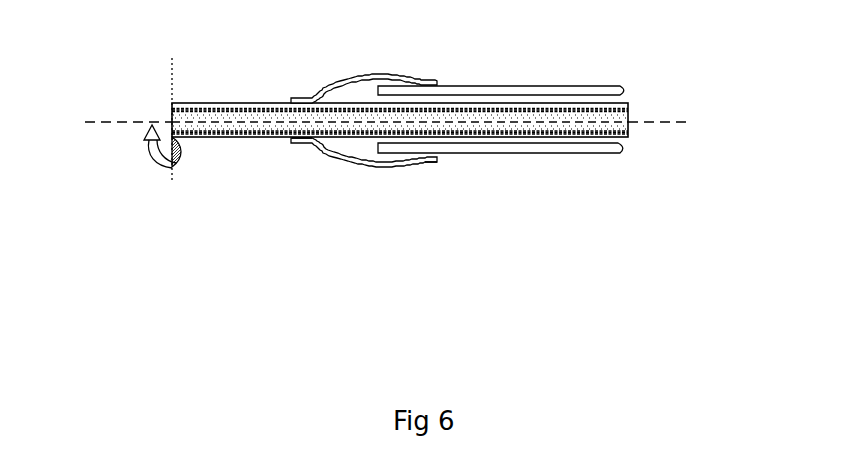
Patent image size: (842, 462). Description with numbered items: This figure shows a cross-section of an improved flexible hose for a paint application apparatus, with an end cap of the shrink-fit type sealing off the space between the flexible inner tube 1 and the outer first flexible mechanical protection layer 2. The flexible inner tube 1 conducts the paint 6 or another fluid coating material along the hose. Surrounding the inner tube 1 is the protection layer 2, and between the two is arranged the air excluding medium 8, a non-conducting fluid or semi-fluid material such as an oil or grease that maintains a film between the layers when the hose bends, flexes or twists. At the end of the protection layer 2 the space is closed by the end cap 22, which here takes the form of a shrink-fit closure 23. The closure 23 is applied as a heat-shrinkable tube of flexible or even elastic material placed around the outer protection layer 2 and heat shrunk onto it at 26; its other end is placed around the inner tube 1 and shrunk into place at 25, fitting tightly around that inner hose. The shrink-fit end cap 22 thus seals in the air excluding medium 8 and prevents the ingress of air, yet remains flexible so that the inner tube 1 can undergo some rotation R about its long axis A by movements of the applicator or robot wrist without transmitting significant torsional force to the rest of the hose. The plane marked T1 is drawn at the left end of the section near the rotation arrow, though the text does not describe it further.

The flexible inner tube 1 is at (555, 140).
The first flexible mechanical protection layer 2 is at (470, 148).
The paint 6 is at (602, 140).
The air excluding medium 8 is at (502, 142).
The end cap 22 is at (344, 170).
The shrink-fit closure 23 is at (340, 80).
The shrunk location on inner hose 25 is at (296, 141).
The shrunk location on outer protection layer 26 is at (432, 170).
The long axis A is at (399, 124).
The transverse plane T1 is at (189, 120).
The rotation R is at (154, 151).